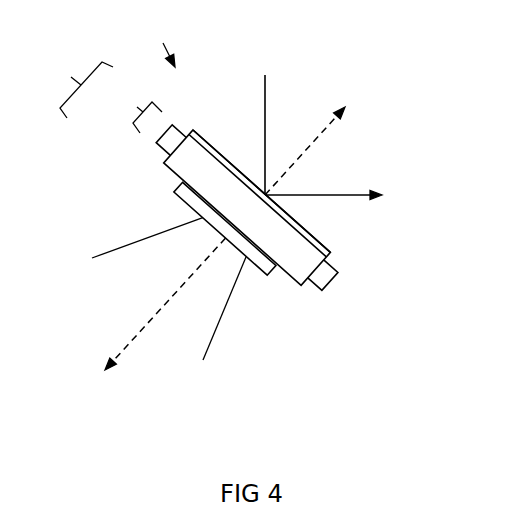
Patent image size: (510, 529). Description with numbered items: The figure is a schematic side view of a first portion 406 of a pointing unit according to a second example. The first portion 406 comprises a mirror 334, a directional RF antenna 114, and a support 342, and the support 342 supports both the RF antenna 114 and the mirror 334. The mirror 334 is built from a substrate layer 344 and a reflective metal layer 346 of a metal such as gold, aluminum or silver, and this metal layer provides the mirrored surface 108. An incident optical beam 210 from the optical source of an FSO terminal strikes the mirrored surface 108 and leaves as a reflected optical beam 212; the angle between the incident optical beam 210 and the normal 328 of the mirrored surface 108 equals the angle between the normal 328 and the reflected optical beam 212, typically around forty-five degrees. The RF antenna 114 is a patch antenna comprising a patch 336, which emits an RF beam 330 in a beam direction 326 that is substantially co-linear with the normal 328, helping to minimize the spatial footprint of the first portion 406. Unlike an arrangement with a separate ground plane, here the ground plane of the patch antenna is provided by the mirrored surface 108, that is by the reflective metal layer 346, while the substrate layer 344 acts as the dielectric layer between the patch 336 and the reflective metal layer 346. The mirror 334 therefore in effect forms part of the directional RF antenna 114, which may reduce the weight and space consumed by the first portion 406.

The mirrored surface 108 is at (232, 143).
The directional RF antenna 114 is at (75, 81).
The mirror 334 is at (130, 103).
The substrate layer 344 is at (163, 168).
The support 342 is at (332, 288).
The reflective metal layer 346 is at (332, 257).
The patch 336 is at (268, 274).
The incident optical beam 210 is at (265, 75).
The reflected optical beam 212 is at (353, 197).
The normal of the mirrored surface 328 is at (322, 132).
The beam direction 326 is at (157, 315).
The RF beam 330 is at (218, 322).
The first portion 406 is at (170, 42).